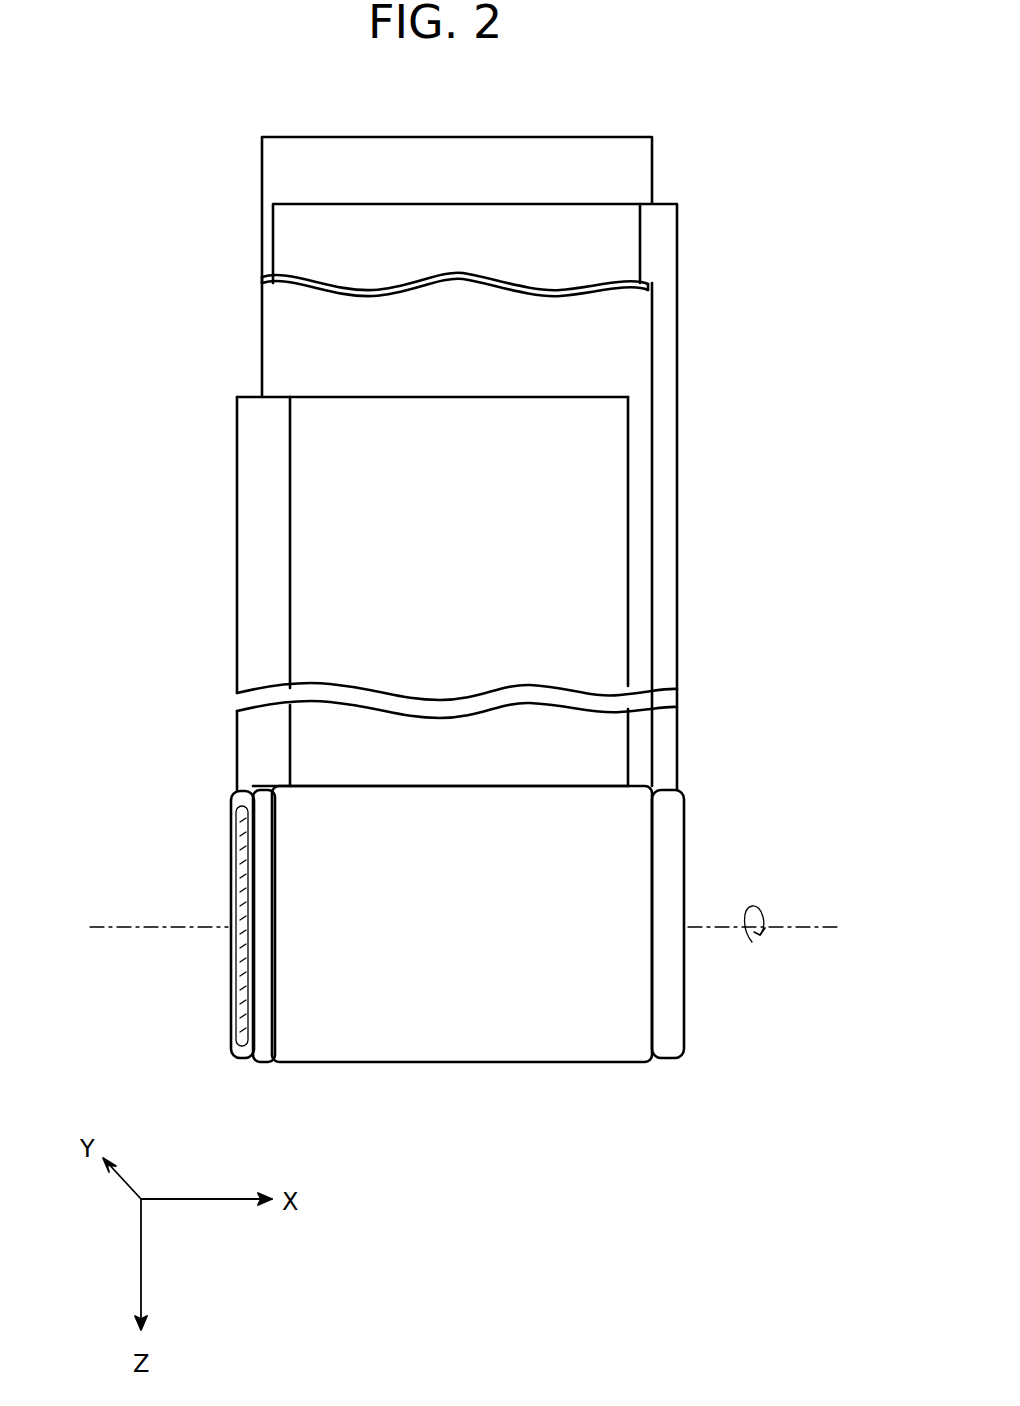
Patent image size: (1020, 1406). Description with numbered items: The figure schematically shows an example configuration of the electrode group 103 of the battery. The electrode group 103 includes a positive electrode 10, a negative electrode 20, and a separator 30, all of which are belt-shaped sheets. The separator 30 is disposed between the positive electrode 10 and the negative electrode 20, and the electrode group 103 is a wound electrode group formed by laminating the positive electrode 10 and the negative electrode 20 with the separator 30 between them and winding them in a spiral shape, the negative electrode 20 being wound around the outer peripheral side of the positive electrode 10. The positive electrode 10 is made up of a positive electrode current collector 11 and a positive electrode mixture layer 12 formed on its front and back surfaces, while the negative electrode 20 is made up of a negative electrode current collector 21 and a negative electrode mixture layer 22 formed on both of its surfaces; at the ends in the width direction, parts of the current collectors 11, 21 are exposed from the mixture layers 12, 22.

The positive electrode 10 is at (376, 593).
The positive electrode current collector 11 is at (275, 555).
The positive electrode mixture layer 12 is at (335, 620).
The negative electrode 20 is at (566, 497).
The negative electrode current collector 21 is at (660, 330).
The negative electrode mixture layer 22 is at (592, 235).
The separator 30 is at (648, 152).
The electrode group 103 is at (586, 916).